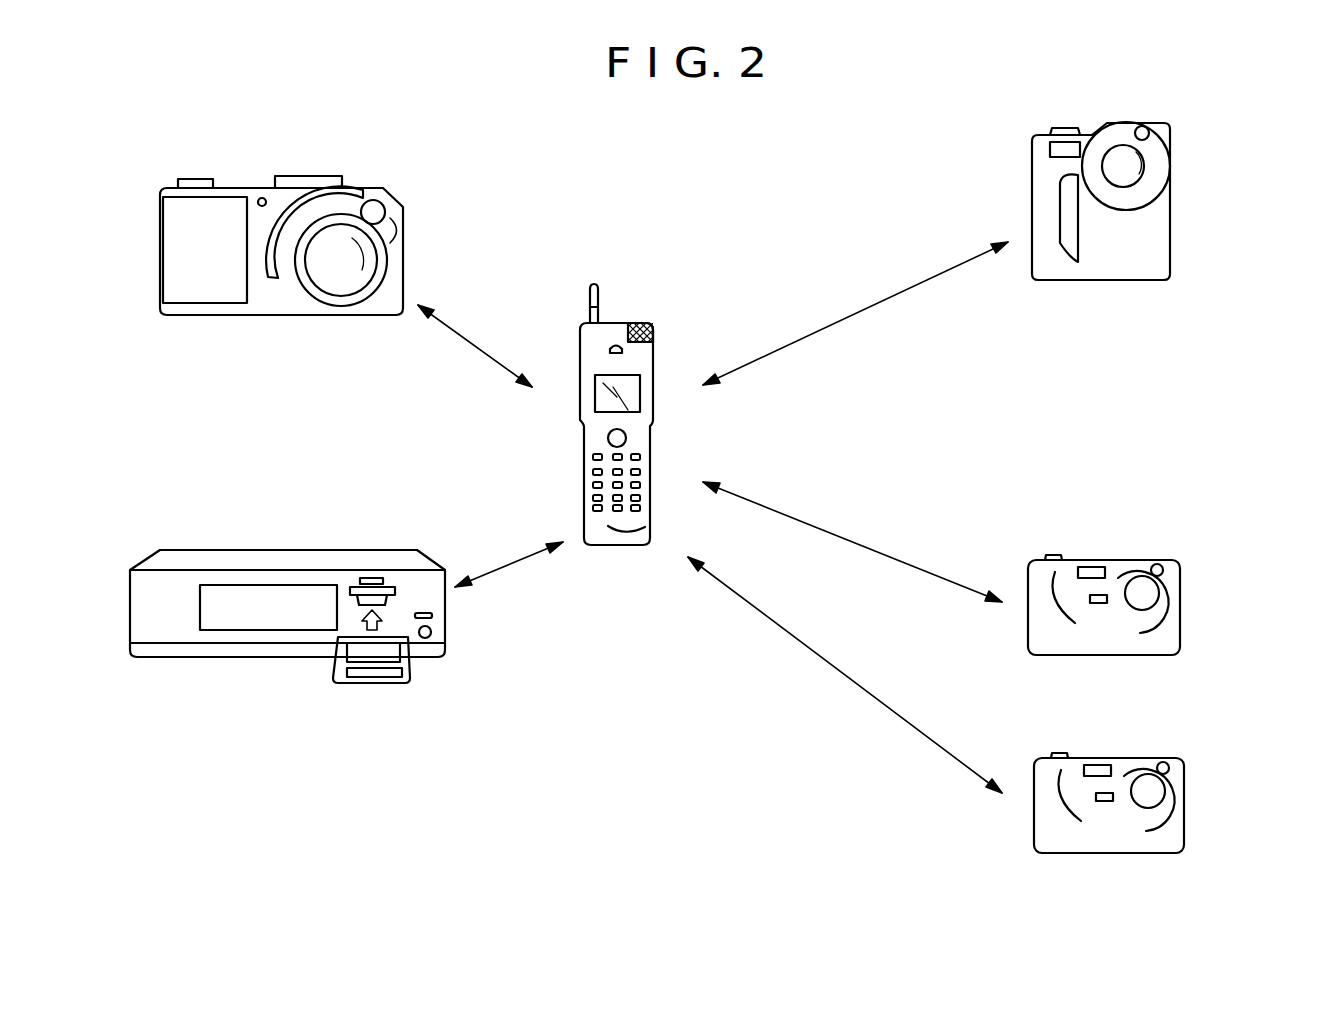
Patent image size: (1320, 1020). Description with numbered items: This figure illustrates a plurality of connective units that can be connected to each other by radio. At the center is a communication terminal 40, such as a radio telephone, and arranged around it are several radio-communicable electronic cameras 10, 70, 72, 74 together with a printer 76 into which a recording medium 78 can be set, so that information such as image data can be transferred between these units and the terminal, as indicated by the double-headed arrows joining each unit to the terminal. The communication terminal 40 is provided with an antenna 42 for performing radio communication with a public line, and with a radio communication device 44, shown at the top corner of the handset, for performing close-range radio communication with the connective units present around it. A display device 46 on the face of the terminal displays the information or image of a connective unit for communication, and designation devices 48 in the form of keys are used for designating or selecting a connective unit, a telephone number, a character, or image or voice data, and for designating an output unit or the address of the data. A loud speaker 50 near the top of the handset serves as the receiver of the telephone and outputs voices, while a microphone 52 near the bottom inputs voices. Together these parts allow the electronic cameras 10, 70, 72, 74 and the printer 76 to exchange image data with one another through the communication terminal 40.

The electronic camera 10 is at (410, 211).
The communication terminal 40 is at (640, 315).
The antenna 42 is at (590, 297).
The radio communication device 44 is at (650, 331).
The display device 46 is at (633, 393).
The designation devices 48 is at (642, 505).
The loud speaker 50 is at (608, 348).
The microphone 52 is at (645, 527).
The electronic camera 70 is at (1022, 555).
The electronic camera 72 is at (1018, 168).
The electronic camera 74 is at (1027, 750).
The printer 76 is at (440, 565).
The recording medium 78 is at (410, 667).